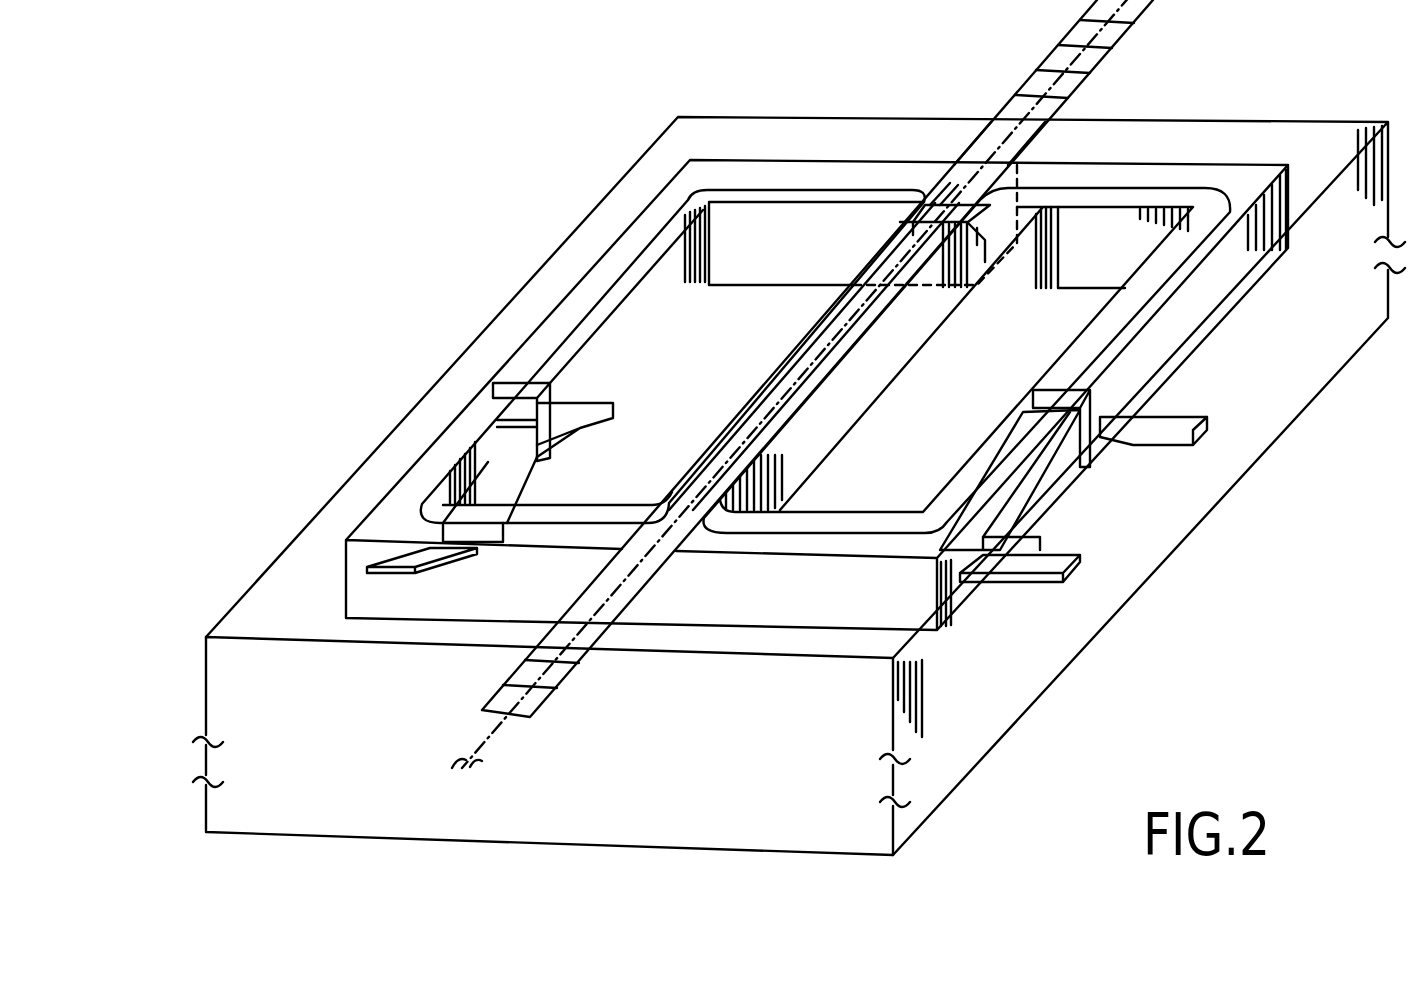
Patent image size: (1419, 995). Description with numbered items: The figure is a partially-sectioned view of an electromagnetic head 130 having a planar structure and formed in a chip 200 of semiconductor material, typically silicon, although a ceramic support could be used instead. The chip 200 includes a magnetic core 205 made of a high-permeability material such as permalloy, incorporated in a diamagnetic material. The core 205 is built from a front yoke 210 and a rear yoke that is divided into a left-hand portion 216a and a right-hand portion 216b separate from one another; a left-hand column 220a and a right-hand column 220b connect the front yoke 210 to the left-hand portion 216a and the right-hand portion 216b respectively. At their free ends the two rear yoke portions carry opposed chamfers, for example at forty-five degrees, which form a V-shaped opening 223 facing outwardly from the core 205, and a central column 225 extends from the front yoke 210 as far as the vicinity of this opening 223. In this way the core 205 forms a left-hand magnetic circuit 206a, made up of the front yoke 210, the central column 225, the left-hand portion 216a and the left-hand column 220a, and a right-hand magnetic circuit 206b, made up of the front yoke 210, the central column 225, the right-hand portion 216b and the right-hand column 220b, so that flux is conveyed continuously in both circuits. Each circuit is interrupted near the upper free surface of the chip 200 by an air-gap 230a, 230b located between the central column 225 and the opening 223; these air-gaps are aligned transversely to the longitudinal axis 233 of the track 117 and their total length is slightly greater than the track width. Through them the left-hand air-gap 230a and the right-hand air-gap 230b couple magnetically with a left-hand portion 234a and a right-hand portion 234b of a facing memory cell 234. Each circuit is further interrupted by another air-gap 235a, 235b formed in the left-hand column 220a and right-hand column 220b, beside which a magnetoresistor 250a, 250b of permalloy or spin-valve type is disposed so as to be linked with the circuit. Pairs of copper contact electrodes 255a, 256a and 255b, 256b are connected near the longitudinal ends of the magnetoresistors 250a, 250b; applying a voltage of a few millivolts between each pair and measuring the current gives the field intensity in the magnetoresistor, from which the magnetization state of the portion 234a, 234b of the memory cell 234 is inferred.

The electromagnetic head 130 is at (347, 276).
The chip 200 is at (1000, 700).
The magnetic core 205 is at (573, 284).
The left-hand portion of the rear yoke 216a is at (764, 174).
The right-hand portion of the rear yoke 216b is at (1248, 180).
The left-hand magnetic circuit 206a is at (437, 505).
The right-hand magnetic circuit 206b is at (795, 540).
The left-hand column 220a is at (627, 338).
The right-hand column 220b is at (1243, 283).
The central column 225 is at (810, 453).
The front yoke 210 is at (642, 603).
The track 117 is at (541, 700).
The longitudinal axis of the track 233 is at (470, 747).
The V-shaped opening 223 is at (980, 172).
The memory cell 234 is at (977, 214).
The left-hand portion of the memory cell 234a is at (928, 206).
The right-hand portion of the memory cell 234b is at (975, 226).
The left-hand air-gap 230a is at (915, 218).
The right-hand air-gap 230b is at (967, 218).
The further air-gap 235a is at (492, 385).
The further air-gap 235b is at (1043, 400).
The magnetoresistor 250a is at (553, 475).
The magnetoresistor 250b is at (1067, 513).
The contact electrode 255a is at (422, 560).
The contact electrode 255b is at (1073, 560).
The contact electrode 256a is at (598, 441).
The contact electrode 256b is at (1195, 418).